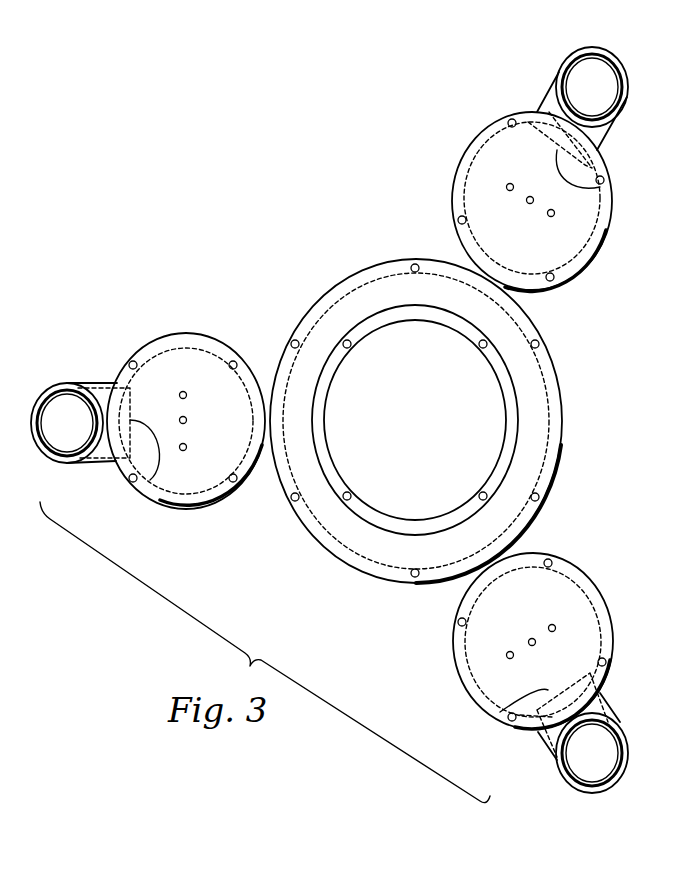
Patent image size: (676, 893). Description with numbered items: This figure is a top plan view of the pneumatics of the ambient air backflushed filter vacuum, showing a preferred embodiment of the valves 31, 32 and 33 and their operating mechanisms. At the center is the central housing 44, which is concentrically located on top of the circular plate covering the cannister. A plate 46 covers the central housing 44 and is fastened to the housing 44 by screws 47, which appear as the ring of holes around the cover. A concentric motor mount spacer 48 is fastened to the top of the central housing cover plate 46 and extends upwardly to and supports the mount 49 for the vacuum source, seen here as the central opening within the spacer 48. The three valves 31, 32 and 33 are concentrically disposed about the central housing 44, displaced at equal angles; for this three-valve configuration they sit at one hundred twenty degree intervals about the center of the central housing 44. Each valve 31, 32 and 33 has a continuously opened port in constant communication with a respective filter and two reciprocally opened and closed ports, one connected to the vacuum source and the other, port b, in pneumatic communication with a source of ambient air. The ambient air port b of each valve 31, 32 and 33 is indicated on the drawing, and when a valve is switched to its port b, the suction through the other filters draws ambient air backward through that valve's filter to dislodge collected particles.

The valve 31 is at (180, 333).
The valve 32 is at (465, 150).
The valve 33 is at (578, 567).
The central housing 44 is at (340, 282).
The plate 46 is at (373, 543).
The screws 47 is at (295, 503).
The motor mount spacer 48 is at (515, 450).
The mount 49 is at (475, 390).
The ambient air port b is at (150, 480).